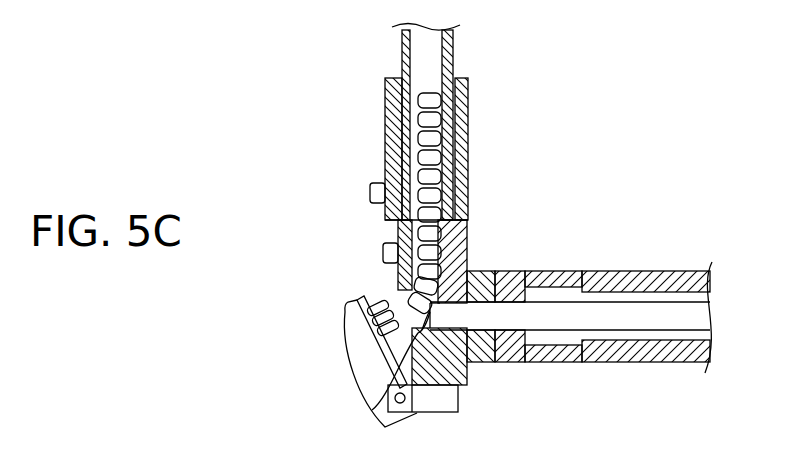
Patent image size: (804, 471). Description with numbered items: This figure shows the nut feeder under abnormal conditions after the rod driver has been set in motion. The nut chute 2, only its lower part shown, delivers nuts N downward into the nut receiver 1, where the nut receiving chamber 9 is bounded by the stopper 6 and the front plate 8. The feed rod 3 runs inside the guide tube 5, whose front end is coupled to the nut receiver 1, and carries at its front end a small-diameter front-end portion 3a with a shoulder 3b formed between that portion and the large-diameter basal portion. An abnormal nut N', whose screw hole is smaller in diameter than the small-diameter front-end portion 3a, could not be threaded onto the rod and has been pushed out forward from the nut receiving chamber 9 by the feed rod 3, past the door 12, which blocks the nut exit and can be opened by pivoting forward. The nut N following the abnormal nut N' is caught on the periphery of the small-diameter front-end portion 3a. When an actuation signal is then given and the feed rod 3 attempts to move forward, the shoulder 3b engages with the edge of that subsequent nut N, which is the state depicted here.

The nut receiver 1 is at (470, 242).
The nut chute 2 is at (402, 42).
The feed rod 3 is at (638, 313).
The small-diameter front-end portion 3a is at (372, 330).
The shoulder (engagement portion) 3b is at (430, 338).
The guide tube 5 is at (690, 270).
The stopper 6 is at (463, 374).
The front plate 8 is at (397, 240).
The nut receiving chamber 9 is at (372, 410).
The door 12 is at (355, 365).
The nut N is at (415, 170).
The abnormal nut N' is at (331, 301).